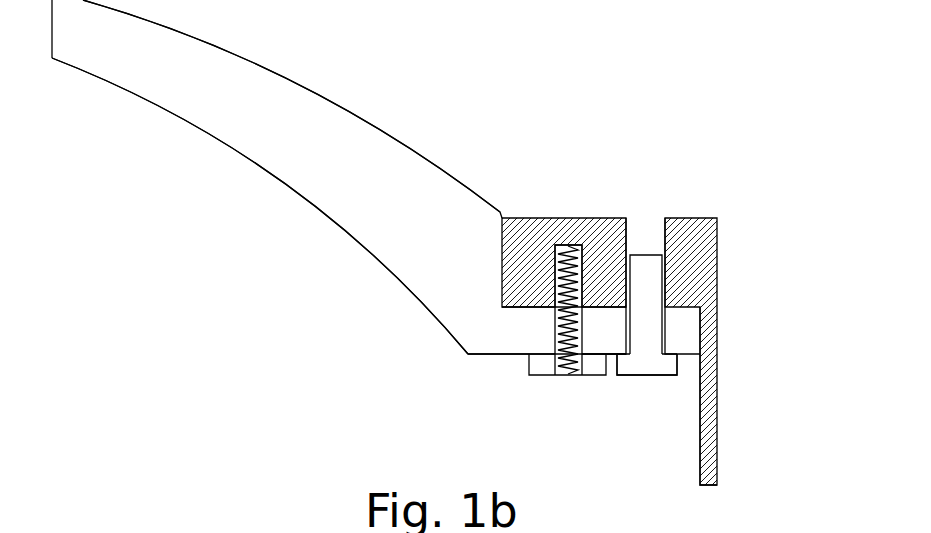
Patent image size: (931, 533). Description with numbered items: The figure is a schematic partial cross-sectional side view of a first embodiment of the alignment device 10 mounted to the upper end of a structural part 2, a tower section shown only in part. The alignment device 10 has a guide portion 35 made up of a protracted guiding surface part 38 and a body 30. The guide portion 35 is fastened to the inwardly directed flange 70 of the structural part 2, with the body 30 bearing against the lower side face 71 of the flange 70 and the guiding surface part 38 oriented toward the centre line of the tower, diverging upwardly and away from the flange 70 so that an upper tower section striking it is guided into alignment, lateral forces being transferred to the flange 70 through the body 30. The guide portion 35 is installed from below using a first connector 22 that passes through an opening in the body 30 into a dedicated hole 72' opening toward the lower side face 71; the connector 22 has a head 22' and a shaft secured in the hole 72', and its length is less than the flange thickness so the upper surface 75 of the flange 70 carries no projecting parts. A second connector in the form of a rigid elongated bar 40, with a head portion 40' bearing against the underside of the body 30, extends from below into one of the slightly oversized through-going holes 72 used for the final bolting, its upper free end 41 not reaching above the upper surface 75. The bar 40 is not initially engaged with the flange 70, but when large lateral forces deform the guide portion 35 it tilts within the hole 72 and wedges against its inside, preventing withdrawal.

The structural part 2 is at (722, 412).
The alignment device 10 is at (421, 116).
The first connector 22 is at (510, 329).
The head 22' is at (564, 407).
The body 30 is at (493, 333).
The guide portion 35 is at (353, 172).
The guiding surface part 38 is at (304, 88).
The rigid elongated bar 40 is at (652, 406).
The head portion 40' is at (637, 408).
The upper free end 41 is at (650, 248).
The flange 70 is at (718, 224).
The lower side face 71 is at (527, 307).
The through-going hole 72 is at (637, 240).
The hole 72' is at (573, 251).
The upper surface 75 is at (530, 217).